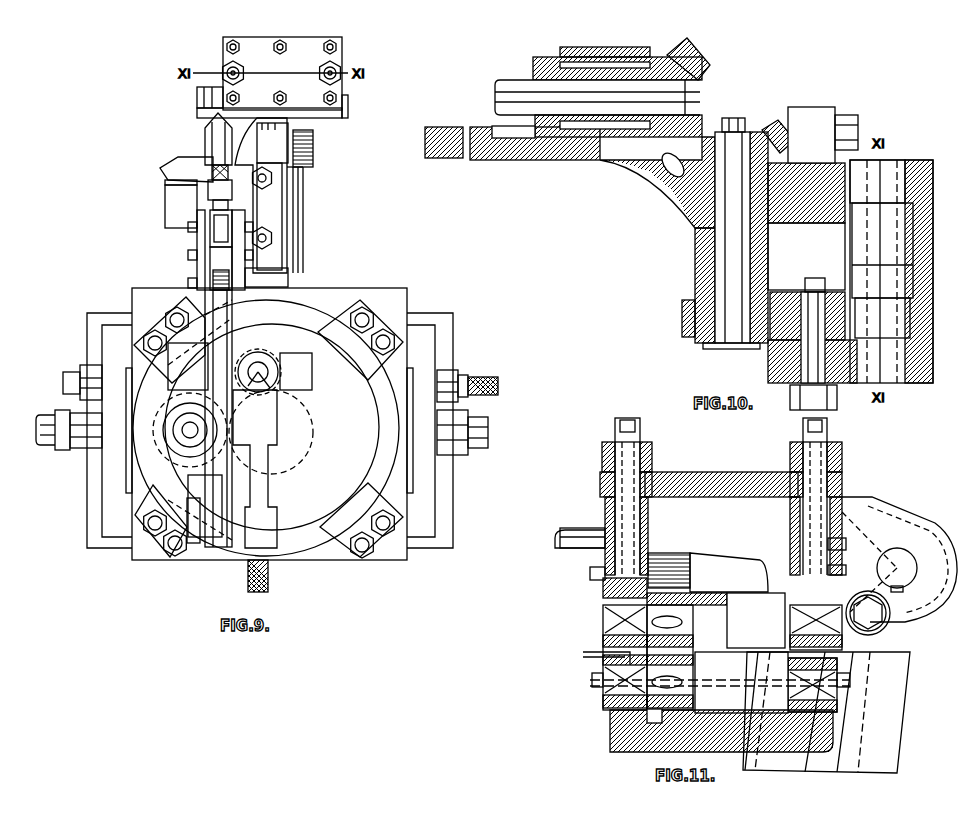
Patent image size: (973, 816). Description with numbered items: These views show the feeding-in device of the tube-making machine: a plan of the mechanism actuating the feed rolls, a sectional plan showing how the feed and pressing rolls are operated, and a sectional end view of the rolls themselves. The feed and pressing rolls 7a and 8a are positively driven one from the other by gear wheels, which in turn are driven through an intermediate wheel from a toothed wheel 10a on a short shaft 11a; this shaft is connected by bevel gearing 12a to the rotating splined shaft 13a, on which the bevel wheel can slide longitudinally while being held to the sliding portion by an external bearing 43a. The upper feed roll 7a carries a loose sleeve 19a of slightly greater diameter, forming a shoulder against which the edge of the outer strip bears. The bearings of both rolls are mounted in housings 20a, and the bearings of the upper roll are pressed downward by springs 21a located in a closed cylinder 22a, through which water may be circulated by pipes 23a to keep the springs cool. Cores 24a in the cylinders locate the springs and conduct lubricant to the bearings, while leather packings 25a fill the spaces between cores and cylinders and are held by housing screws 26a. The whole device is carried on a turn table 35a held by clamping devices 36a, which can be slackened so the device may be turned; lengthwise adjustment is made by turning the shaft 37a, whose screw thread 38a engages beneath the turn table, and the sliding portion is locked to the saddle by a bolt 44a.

In FIG. 10, the upper feed roll 7a is at (882, 270).
In FIG. 11, the upper feed roll 7a is at (756, 620).
In FIG. 11, the feed roll 8a is at (741, 682).
In FIG. 10, the toothed wheel 10a is at (697, 343).
In FIG. 10, the short shaft 11a is at (732, 237).
In FIG. 10, the bevel gearing 12a is at (710, 127).
In FIG. 10, the rotating splined shaft 13a is at (513, 88).
In FIG. 11, the sleeve 19a is at (703, 593).
In FIG. 11, the housings 20a is at (613, 738).
In FIG. 11, the springs 21a is at (793, 532).
In FIG. 11, the closed cylinder 22a is at (795, 546).
In FIG. 11, the pipes 23a is at (858, 535).
In FIG. 11, the cores 24a is at (823, 435).
In FIG. 11, the leather packings 25a is at (608, 525).
In FIG. 11, the housing screws 26a is at (608, 473).
In FIG. 9, the turn table 35a is at (343, 298).
In FIG. 9, the clamping devices 36a is at (373, 330).
In FIG. 9, the shaft 37a is at (470, 393).
In FIG. 9, the screw thread 38a is at (413, 380).
In FIG. 10, the external bearing 43a is at (560, 57).
In FIG. 9, the bolt 44a is at (253, 297).